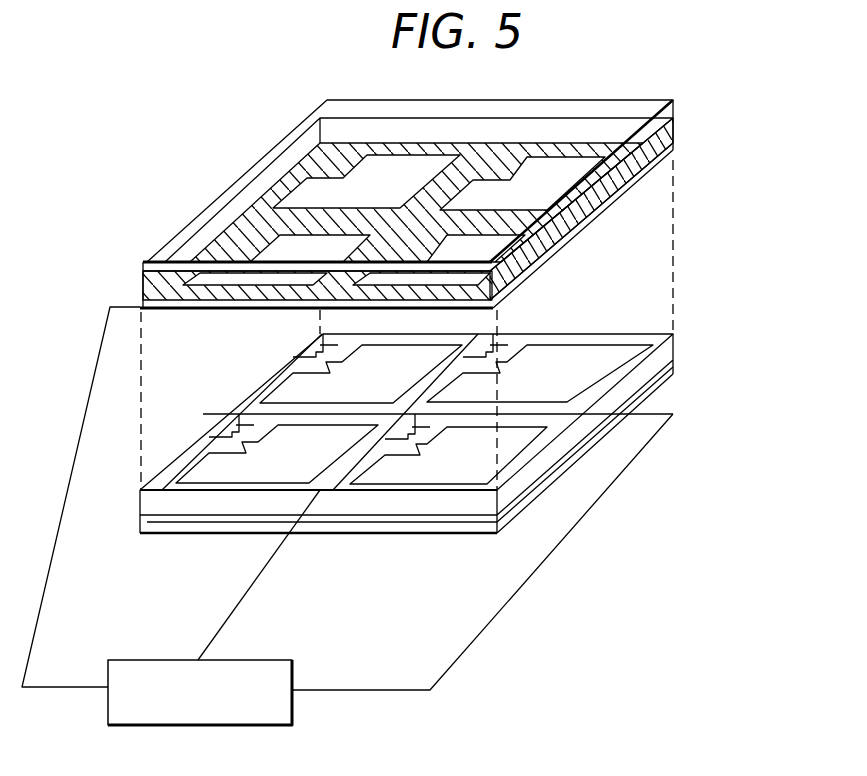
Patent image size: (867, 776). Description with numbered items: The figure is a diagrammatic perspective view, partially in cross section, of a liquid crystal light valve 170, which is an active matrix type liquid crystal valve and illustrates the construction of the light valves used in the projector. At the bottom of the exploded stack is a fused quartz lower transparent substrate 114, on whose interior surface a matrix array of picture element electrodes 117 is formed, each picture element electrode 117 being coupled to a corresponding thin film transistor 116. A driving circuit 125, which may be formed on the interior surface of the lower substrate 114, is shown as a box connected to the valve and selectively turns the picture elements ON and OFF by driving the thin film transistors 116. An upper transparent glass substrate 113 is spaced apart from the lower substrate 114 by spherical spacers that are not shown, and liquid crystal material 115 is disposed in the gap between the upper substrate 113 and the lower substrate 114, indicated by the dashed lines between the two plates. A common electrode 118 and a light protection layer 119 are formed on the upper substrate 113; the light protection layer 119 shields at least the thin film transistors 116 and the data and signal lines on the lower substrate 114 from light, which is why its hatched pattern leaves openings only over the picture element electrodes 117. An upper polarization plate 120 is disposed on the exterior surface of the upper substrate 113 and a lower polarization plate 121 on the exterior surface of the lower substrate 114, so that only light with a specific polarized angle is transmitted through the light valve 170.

The light valve 170 is at (691, 65).
The upper transparent glass substrate 113 is at (670, 135).
The light protection layer 119 is at (670, 162).
The common electrode 118 is at (650, 180).
The upper polarization plate 120 is at (143, 254).
The liquid crystal material 115 is at (665, 293).
The lower transparent substrate 114 is at (670, 353).
The lower polarization plate 121 is at (169, 535).
The picture element electrode 117 is at (465, 463).
The thin film transistor 116 is at (424, 494).
The driving circuit 125 is at (110, 713).